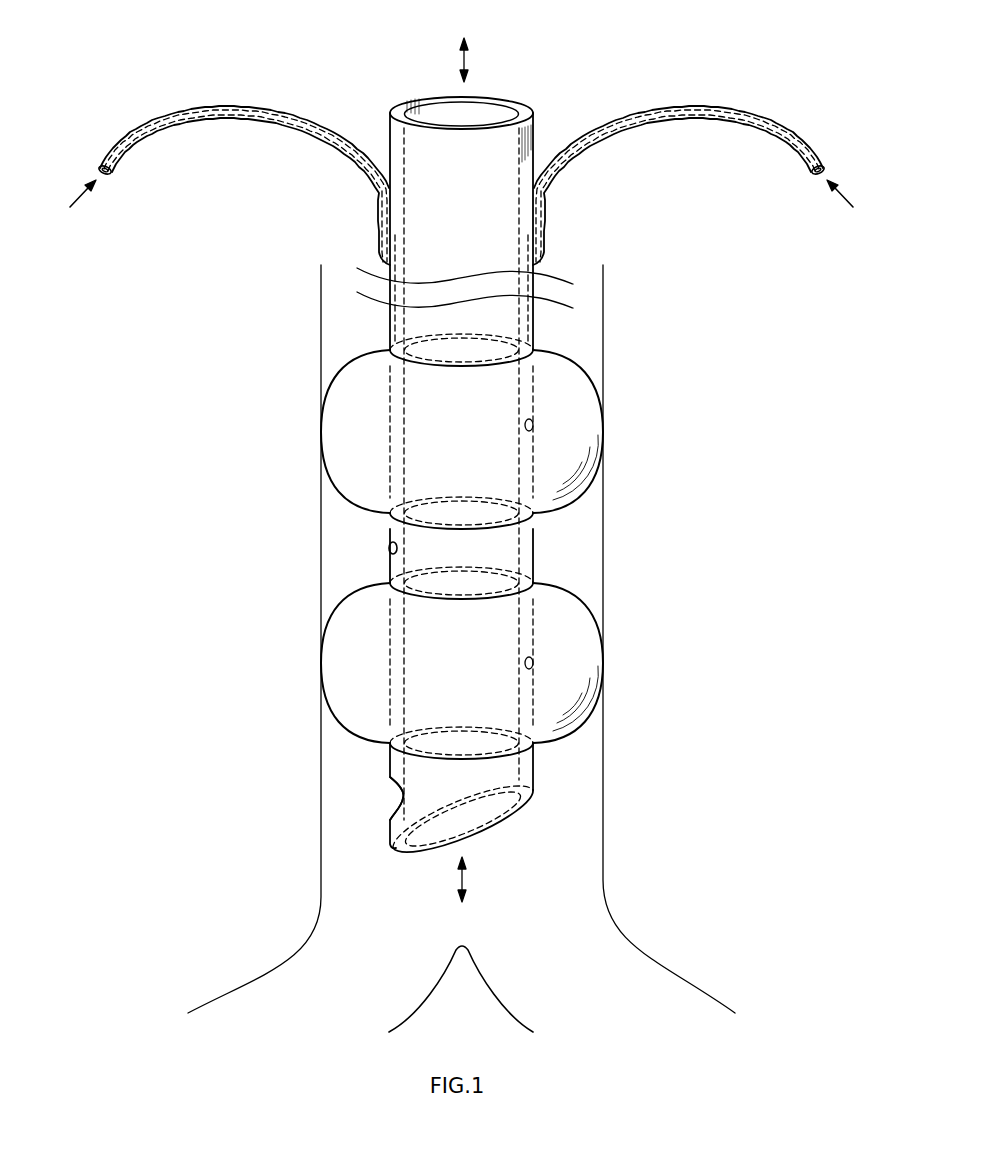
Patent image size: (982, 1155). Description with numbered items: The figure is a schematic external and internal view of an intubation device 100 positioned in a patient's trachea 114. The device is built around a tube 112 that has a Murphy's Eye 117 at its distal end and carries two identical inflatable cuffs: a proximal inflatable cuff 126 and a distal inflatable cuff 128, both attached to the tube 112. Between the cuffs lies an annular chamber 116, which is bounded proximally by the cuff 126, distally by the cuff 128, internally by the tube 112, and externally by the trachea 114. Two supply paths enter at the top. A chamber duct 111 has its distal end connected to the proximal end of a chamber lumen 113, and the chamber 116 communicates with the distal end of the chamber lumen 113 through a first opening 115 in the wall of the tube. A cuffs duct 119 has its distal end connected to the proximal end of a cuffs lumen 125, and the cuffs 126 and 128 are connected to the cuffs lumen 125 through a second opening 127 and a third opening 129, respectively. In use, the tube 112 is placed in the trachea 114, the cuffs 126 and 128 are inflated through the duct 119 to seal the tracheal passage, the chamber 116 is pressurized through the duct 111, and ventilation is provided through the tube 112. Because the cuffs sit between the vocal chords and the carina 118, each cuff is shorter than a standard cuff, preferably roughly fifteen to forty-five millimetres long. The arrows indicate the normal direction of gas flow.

The intubation device 100 is at (138, 586).
The chamber duct 111 is at (217, 105).
The tube 112 is at (389, 138).
The chamber lumen 113 is at (390, 247).
The trachea 114 is at (320, 341).
The first opening 115 is at (390, 555).
The annular chamber 116 is at (340, 550).
The Murphy's Eye 117 is at (400, 806).
The carina 118 is at (461, 947).
The cuffs duct 119 is at (597, 120).
The cuffs lumen 125 is at (535, 243).
The proximal inflatable cuff 126 is at (568, 362).
The second opening 127 is at (532, 423).
The distal inflatable cuff 128 is at (575, 595).
The third opening 129 is at (532, 661).